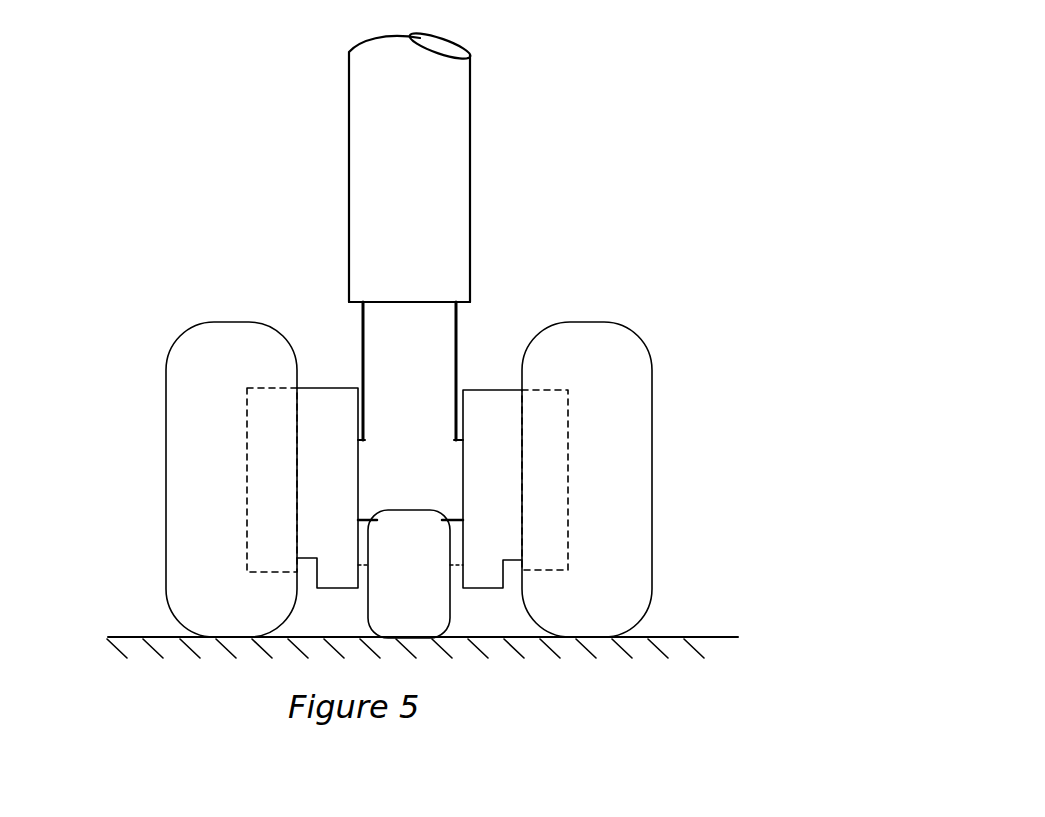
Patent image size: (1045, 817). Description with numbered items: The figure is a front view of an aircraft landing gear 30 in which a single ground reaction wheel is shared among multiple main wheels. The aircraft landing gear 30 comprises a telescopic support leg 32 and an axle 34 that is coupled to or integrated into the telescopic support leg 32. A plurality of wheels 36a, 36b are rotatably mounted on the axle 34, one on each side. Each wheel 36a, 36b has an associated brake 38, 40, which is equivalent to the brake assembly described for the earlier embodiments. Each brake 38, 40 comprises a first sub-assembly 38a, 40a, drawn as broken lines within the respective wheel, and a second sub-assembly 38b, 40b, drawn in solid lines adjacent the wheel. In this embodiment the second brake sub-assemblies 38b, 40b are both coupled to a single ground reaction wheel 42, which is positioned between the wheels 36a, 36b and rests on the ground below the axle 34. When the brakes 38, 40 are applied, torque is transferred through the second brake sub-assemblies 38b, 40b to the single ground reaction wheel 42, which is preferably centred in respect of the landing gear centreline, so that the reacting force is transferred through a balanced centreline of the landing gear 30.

The aircraft landing gear 30 is at (612, 124).
The telescopic support leg 32 is at (340, 174).
The axle 34 is at (432, 484).
The wheel 36a is at (240, 340).
The wheel 36b is at (570, 330).
The brake 38 is at (311, 380).
The first sub-assembly 38a is at (262, 522).
The second sub-assembly 38b is at (318, 484).
The brake 40 is at (487, 380).
The first sub-assembly 40a is at (548, 405).
The second sub-assembly 40b is at (500, 452).
The ground reaction wheel 42 is at (420, 568).